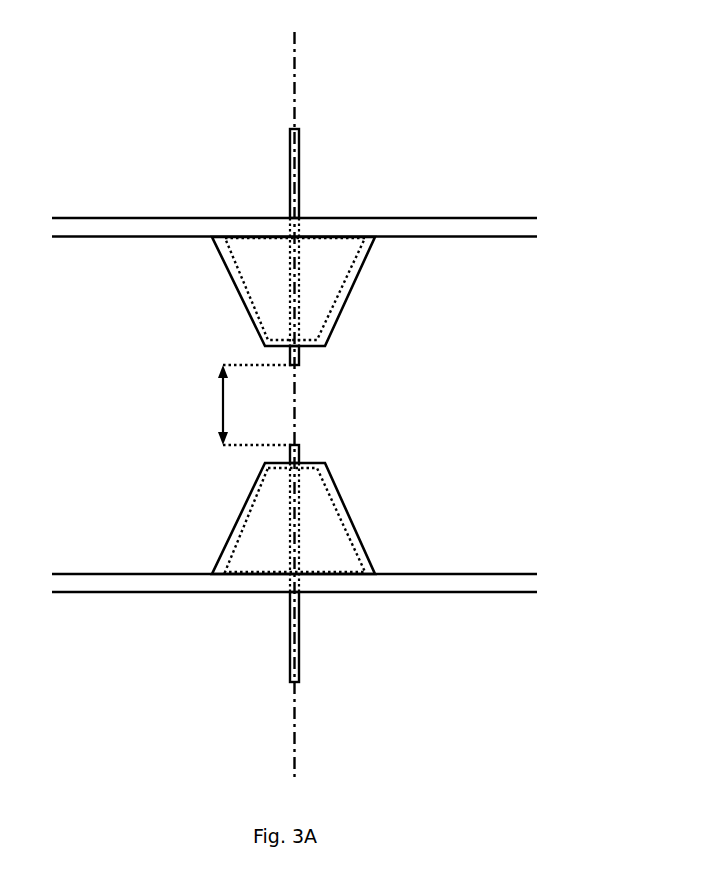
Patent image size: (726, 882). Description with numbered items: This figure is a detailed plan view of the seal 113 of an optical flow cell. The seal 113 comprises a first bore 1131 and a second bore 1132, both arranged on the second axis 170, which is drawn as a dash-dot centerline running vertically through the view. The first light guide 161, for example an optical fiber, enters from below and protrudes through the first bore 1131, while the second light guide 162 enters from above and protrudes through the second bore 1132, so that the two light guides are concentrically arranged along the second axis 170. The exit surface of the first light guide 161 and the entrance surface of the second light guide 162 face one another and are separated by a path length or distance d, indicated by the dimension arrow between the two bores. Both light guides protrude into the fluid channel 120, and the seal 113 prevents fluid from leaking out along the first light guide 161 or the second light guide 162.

The second axis 170 is at (294, 108).
The second light guide 162 is at (290, 172).
The first light guide 161 is at (290, 638).
The seal 113 is at (253, 492).
The second bore 1132 is at (299, 352).
The first bore 1131 is at (299, 460).
The fluid channel 120 is at (294, 405).
The distance d is at (256, 405).